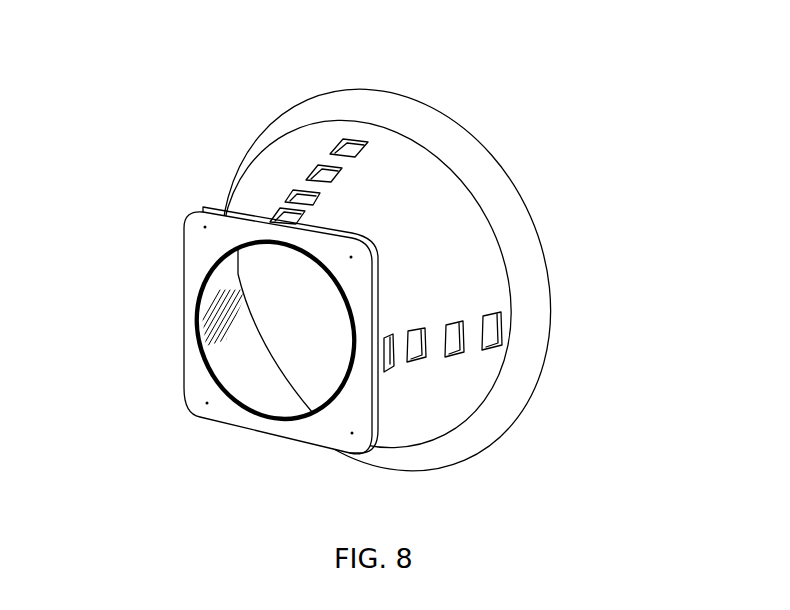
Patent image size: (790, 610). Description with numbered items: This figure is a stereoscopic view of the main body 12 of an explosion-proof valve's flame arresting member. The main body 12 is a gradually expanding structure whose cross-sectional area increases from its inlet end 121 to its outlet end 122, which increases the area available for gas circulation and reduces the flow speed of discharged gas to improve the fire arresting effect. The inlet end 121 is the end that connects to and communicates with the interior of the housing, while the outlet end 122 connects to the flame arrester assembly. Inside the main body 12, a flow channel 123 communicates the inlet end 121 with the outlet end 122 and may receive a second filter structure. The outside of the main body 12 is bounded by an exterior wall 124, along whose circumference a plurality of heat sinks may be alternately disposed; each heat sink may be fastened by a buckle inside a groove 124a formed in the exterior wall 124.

The main body 12 is at (163, 58).
The inlet end 121 is at (160, 327).
The outlet end 122 is at (547, 202).
The flow channel 123 is at (198, 265).
The exterior wall 124 is at (475, 287).
The groove 124a is at (501, 318).